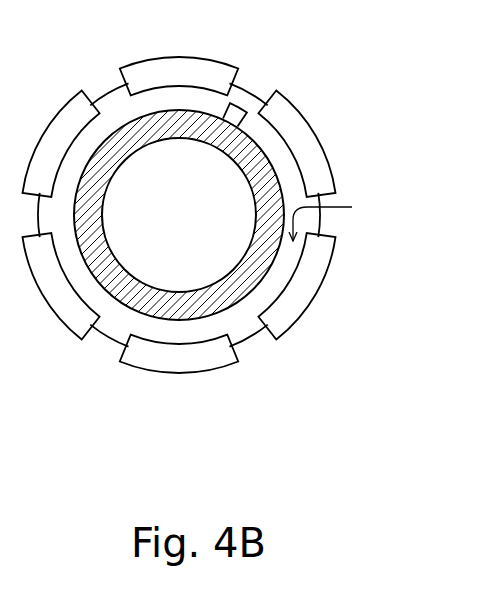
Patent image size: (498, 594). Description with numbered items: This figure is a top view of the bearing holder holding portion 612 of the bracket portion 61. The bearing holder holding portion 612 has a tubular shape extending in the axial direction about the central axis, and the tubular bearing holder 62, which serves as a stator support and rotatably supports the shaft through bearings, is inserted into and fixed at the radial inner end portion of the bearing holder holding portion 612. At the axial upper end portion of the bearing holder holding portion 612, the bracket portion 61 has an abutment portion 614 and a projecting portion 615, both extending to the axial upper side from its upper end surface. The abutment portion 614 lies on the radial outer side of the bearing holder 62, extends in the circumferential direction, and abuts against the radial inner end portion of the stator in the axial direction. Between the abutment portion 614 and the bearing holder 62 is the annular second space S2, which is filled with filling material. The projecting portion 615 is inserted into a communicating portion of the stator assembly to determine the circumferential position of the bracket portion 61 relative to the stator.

The bracket portion 61 is at (208, 191).
The bearing holder holding portion 612 is at (242, 93).
The abutment portion 614 is at (303, 142).
The projecting portion 615 is at (237, 117).
The bearing holder 62 is at (224, 294).
The second space S2 is at (340, 218).